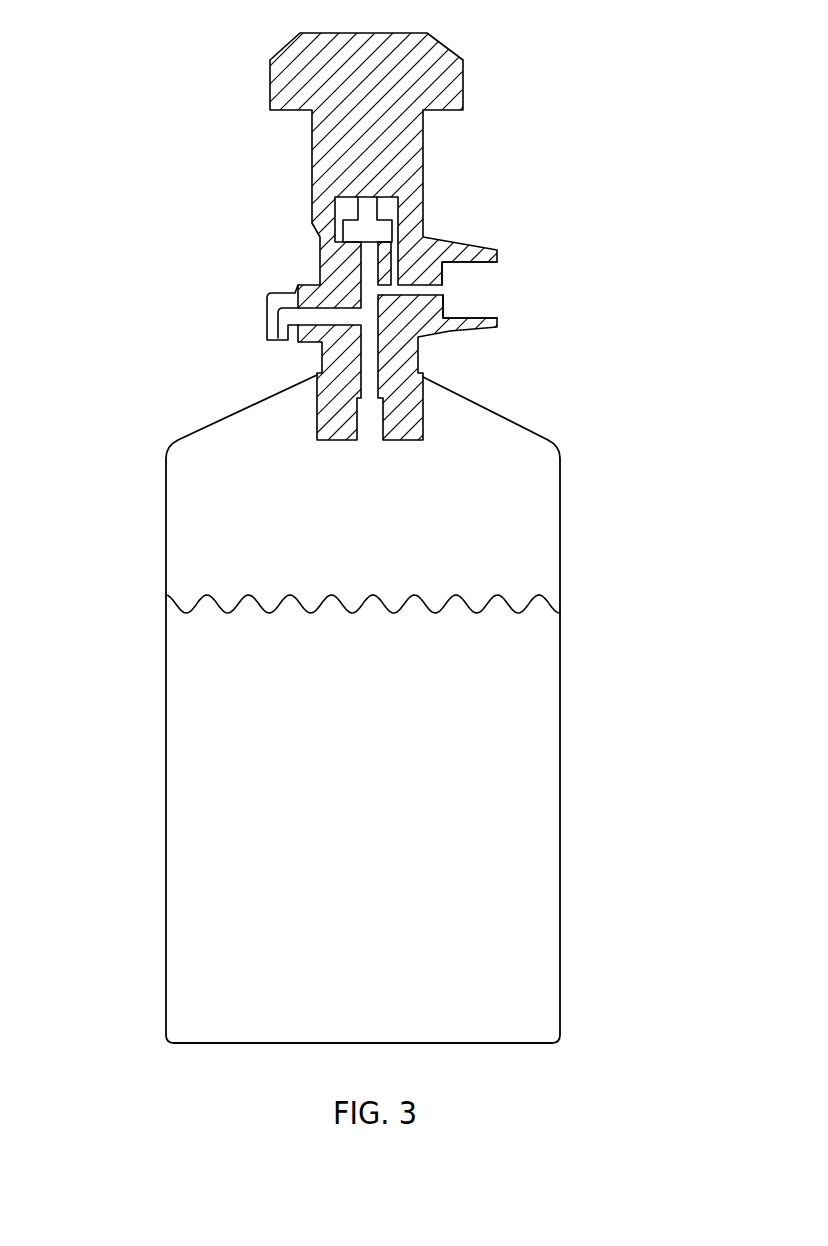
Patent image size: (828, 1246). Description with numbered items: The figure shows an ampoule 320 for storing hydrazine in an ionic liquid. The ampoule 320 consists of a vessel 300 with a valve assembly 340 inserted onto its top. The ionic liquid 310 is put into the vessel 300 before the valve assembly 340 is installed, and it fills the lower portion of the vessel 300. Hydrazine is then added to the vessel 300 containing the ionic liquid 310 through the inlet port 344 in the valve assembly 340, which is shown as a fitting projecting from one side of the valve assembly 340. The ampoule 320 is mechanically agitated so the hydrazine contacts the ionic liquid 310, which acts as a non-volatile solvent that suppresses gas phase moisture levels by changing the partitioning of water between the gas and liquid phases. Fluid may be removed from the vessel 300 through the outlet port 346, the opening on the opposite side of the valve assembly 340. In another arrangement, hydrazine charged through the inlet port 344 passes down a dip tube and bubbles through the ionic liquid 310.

The ampoule 320 is at (189, 270).
The valve assembly 340 is at (430, 167).
The inlet port 344 is at (267, 342).
The outlet port 346 is at (478, 284).
The vessel 300 is at (561, 542).
The ionic liquid 310 is at (533, 763).